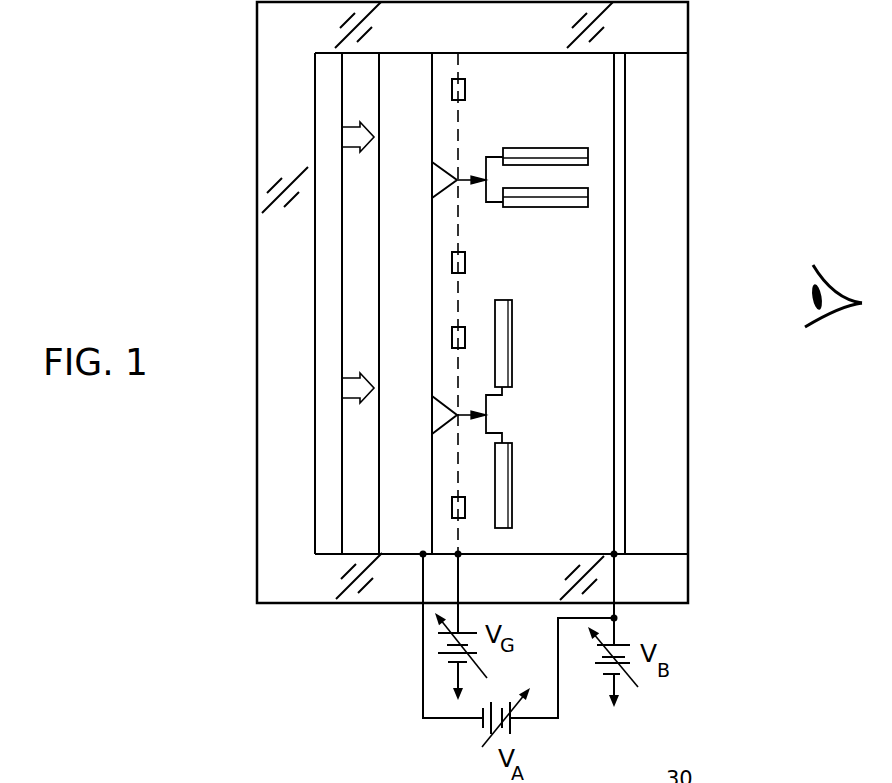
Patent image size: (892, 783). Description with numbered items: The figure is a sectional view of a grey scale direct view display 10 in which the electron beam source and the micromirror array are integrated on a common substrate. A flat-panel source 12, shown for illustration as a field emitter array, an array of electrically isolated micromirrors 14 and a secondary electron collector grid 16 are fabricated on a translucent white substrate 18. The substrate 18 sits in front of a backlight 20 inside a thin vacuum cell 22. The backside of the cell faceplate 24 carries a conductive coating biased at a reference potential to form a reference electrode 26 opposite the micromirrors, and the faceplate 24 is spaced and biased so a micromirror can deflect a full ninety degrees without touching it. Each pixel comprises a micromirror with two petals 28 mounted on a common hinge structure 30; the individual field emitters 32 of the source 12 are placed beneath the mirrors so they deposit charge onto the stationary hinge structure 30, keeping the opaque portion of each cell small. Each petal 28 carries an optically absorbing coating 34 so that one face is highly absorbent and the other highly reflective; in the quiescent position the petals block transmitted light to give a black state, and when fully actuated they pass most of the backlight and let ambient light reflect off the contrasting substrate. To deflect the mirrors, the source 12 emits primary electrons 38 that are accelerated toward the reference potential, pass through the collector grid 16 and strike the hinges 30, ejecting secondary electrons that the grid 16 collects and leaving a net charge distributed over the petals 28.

The grey scale direct view display 10 is at (180, 557).
The flat-panel source 12 is at (447, 532).
The micromirrors 14 is at (536, 504).
The secondary electron collector grid 16 is at (465, 85).
The translucent white substrate 18 is at (420, 307).
The backlight 20 is at (329, 246).
The thin vacuum cell 22 is at (272, 90).
The cell faceplate 24 is at (672, 96).
The reference electrode 26 is at (622, 473).
The petals 28 is at (533, 150).
The hinge structure 30 is at (490, 202).
The field emitters 32 is at (437, 416).
The optically absorbing coating 34 is at (574, 167).
The primary electrons 38 is at (461, 178).